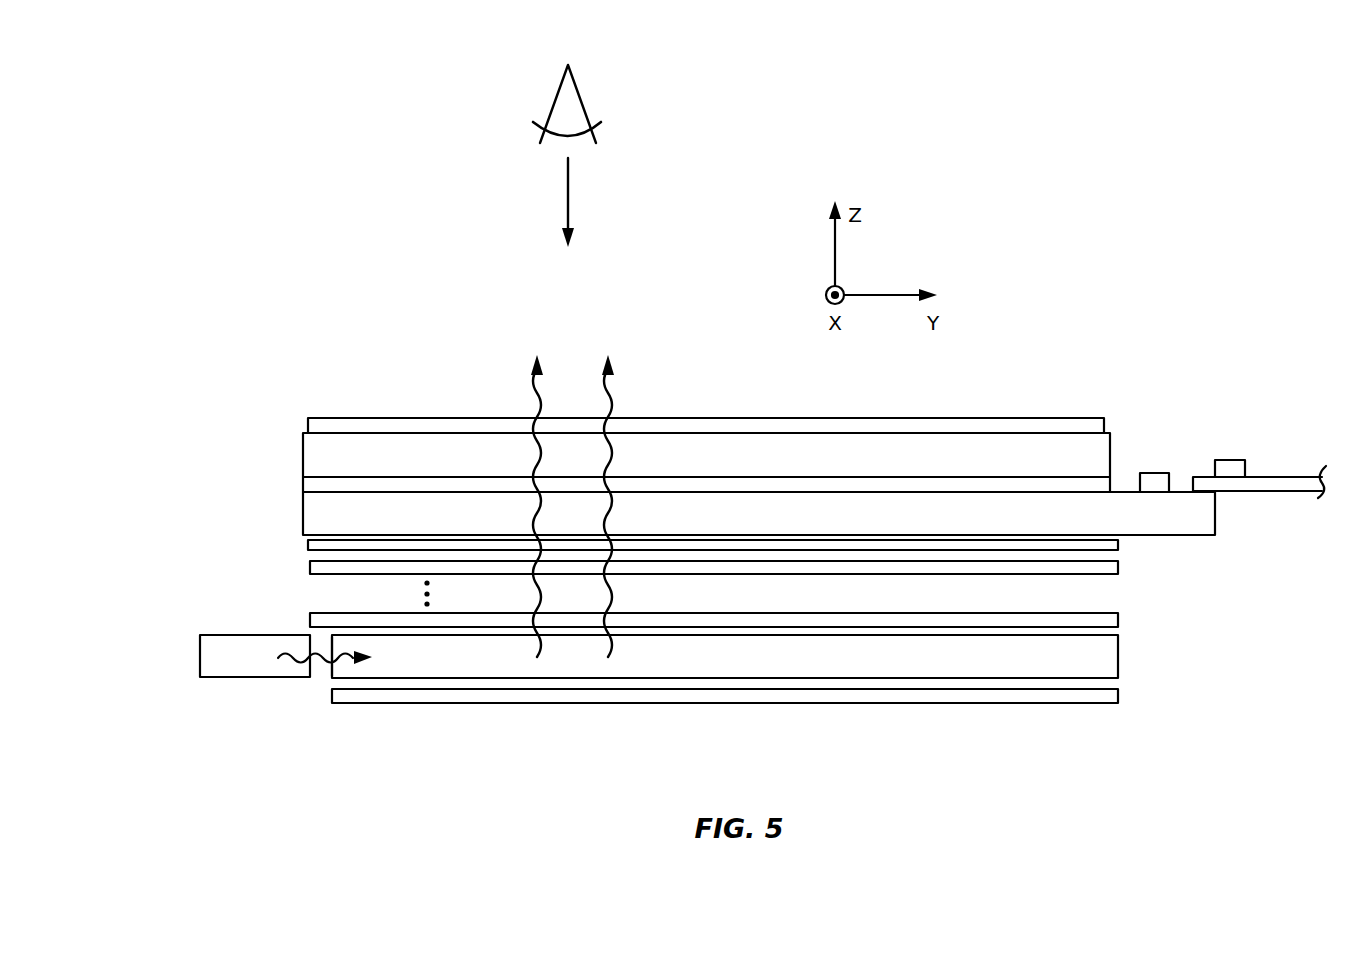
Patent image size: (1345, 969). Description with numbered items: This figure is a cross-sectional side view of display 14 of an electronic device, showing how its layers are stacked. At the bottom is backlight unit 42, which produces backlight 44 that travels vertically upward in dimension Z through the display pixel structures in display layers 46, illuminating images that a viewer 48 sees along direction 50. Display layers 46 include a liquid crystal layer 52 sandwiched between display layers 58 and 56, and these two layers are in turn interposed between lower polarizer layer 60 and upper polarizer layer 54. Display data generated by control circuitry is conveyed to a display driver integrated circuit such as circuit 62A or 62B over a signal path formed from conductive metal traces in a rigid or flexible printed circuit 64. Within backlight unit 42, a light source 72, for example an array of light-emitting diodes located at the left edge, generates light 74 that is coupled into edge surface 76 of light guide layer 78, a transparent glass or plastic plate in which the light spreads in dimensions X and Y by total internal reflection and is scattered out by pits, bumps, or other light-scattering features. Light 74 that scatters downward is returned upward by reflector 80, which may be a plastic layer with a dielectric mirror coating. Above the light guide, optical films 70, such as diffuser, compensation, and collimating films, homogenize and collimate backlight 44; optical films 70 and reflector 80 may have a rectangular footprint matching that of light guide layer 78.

The display 14 is at (1148, 206).
The backlight unit 42 is at (656, 660).
The backlight 44 is at (600, 397).
The display layers 46 is at (715, 472).
The viewer 48 is at (582, 101).
The direction 50 is at (568, 205).
The liquid crystal layer 52 is at (380, 483).
The upper polarizer layer 54 is at (330, 425).
The display layer 56 is at (310, 453).
The display layer 58 is at (310, 503).
The lower polarizer layer 60 is at (671, 562).
The display driver integrated circuit 62A is at (1152, 470).
The display driver integrated circuit 62B is at (1232, 458).
The printed circuit 64 is at (1270, 487).
The optical films 70 is at (310, 617).
The light source 72 is at (210, 658).
The light 74 is at (295, 655).
The edge surface 76 is at (332, 672).
The light guide layer 78 is at (420, 672).
The reflector 80 is at (507, 697).